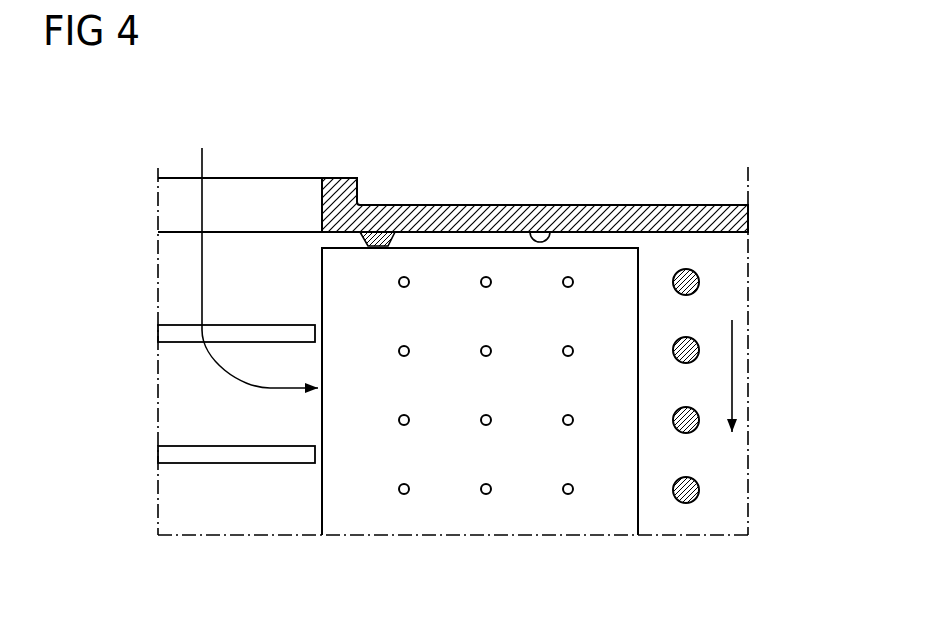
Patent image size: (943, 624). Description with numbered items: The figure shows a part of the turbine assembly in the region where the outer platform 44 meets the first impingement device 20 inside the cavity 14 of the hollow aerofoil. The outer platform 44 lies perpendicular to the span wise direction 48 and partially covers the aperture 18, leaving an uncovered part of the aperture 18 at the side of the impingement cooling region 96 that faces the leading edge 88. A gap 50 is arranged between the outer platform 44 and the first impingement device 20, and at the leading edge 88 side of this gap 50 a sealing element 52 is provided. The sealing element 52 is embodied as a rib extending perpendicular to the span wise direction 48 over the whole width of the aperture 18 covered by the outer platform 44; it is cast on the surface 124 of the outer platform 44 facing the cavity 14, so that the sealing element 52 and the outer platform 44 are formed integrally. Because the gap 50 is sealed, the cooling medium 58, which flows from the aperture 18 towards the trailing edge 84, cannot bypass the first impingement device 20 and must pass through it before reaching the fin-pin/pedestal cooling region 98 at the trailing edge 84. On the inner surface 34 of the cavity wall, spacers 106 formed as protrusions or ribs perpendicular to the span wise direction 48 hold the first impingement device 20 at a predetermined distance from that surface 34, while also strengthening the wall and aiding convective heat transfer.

The cavity 14 is at (307, 267).
The aperture 18 is at (246, 197).
The first impingement device 20 is at (328, 497).
The inner surface 34 is at (247, 278).
The outer platform 44 is at (610, 218).
The span wise direction 48 is at (732, 365).
The gap 50 is at (468, 243).
The sealing element 52 is at (385, 240).
The cooling medium 58 is at (202, 150).
The trailing edge 84 is at (702, 196).
The leading edge 88 is at (178, 207).
The impingement cooling region 96 is at (353, 541).
The fin-pin/pedestal cooling region 98 is at (725, 469).
The spacers 106 is at (163, 333).
The surface of the outer platform 124 is at (547, 232).